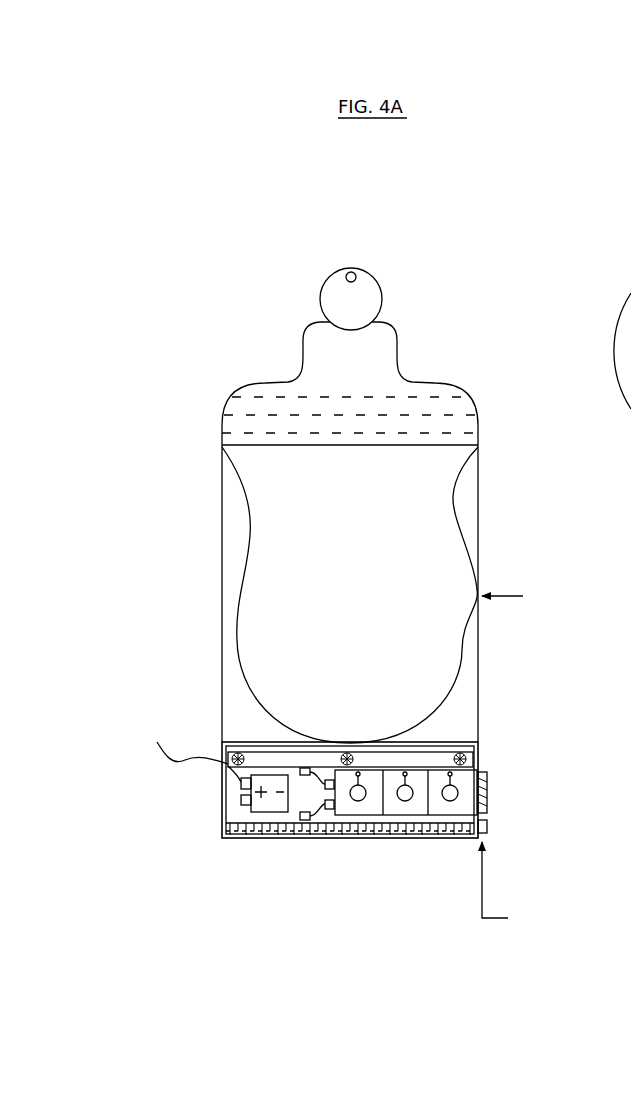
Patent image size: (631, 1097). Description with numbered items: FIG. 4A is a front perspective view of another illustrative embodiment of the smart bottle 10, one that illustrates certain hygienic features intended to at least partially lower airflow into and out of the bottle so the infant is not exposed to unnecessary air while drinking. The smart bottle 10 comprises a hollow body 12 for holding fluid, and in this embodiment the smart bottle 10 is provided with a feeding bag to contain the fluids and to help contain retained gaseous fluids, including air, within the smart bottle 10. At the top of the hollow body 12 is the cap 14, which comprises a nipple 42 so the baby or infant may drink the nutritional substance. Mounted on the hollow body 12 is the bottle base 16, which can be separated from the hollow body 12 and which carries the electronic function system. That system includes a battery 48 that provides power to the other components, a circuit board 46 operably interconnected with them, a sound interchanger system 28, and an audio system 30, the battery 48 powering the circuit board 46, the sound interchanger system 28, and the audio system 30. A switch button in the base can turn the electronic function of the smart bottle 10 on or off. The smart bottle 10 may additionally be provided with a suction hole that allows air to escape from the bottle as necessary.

The smart bottle 10 is at (457, 320).
The hollow body 12 is at (478, 508).
The bottle cap 14 is at (462, 389).
The bottle base 16 is at (241, 802).
The sound interchanger system 28 is at (492, 796).
The audio system 30 is at (445, 741).
The nipple 42 is at (370, 268).
The circuit board 46 is at (362, 842).
The battery 48 is at (239, 793).